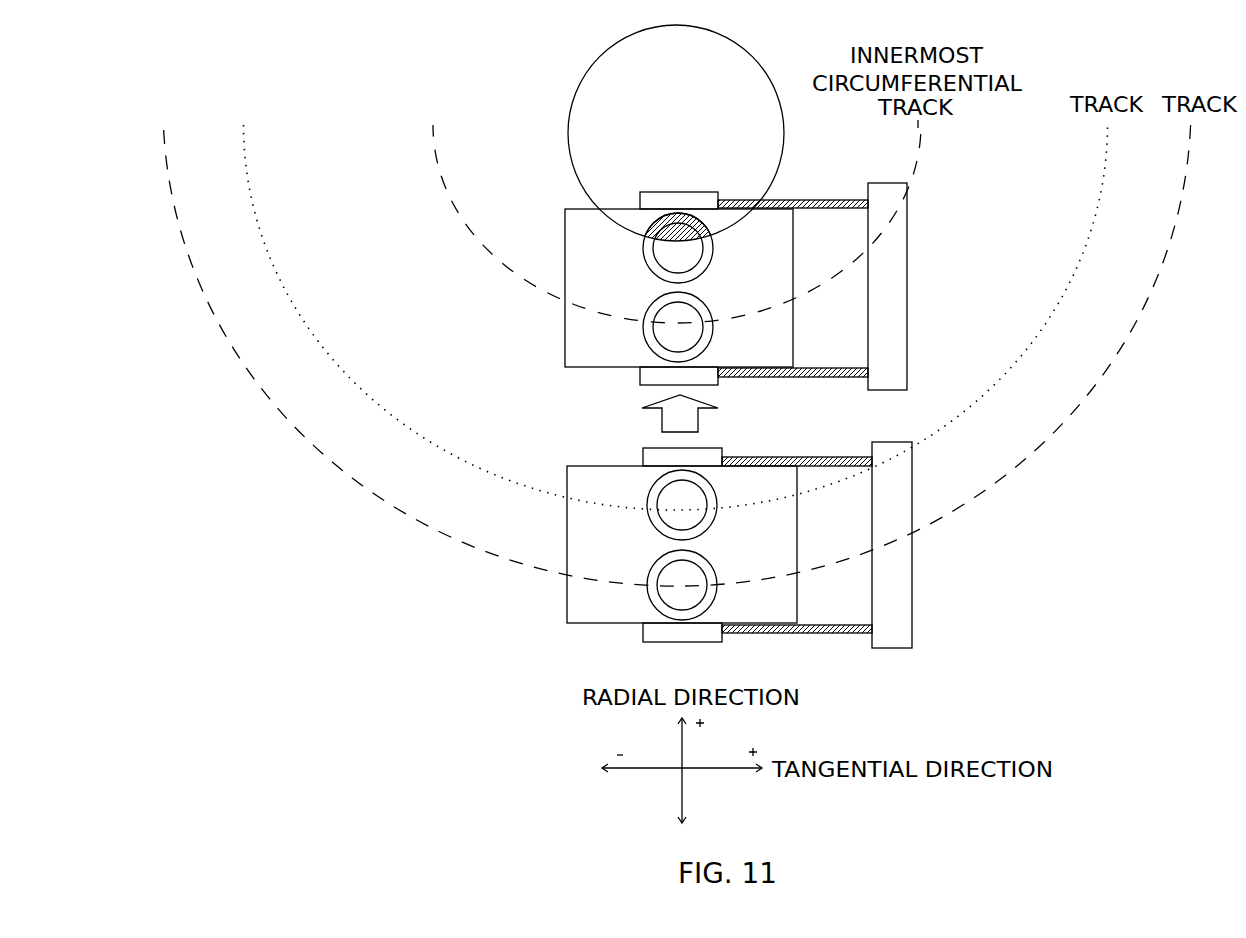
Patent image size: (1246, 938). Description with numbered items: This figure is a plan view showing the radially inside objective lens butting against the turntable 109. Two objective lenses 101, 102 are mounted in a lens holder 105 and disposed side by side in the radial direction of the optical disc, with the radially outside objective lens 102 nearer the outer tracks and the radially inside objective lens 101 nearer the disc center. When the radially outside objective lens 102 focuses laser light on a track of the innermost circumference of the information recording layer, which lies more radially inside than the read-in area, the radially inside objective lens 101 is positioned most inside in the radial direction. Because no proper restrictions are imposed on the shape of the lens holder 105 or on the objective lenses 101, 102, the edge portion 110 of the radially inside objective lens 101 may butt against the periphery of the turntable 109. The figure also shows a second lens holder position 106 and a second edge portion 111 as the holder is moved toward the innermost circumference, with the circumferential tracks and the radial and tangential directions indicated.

The radially inside objective lens 101 is at (707, 270).
The radially outside objective lens 102 is at (712, 312).
The lens holder 105 is at (565, 338).
The second slider 106 is at (567, 467).
The turntable 109 is at (590, 70).
The edge portion of the radially inside objective lens 110 is at (710, 242).
The second element ring 111 is at (712, 337).